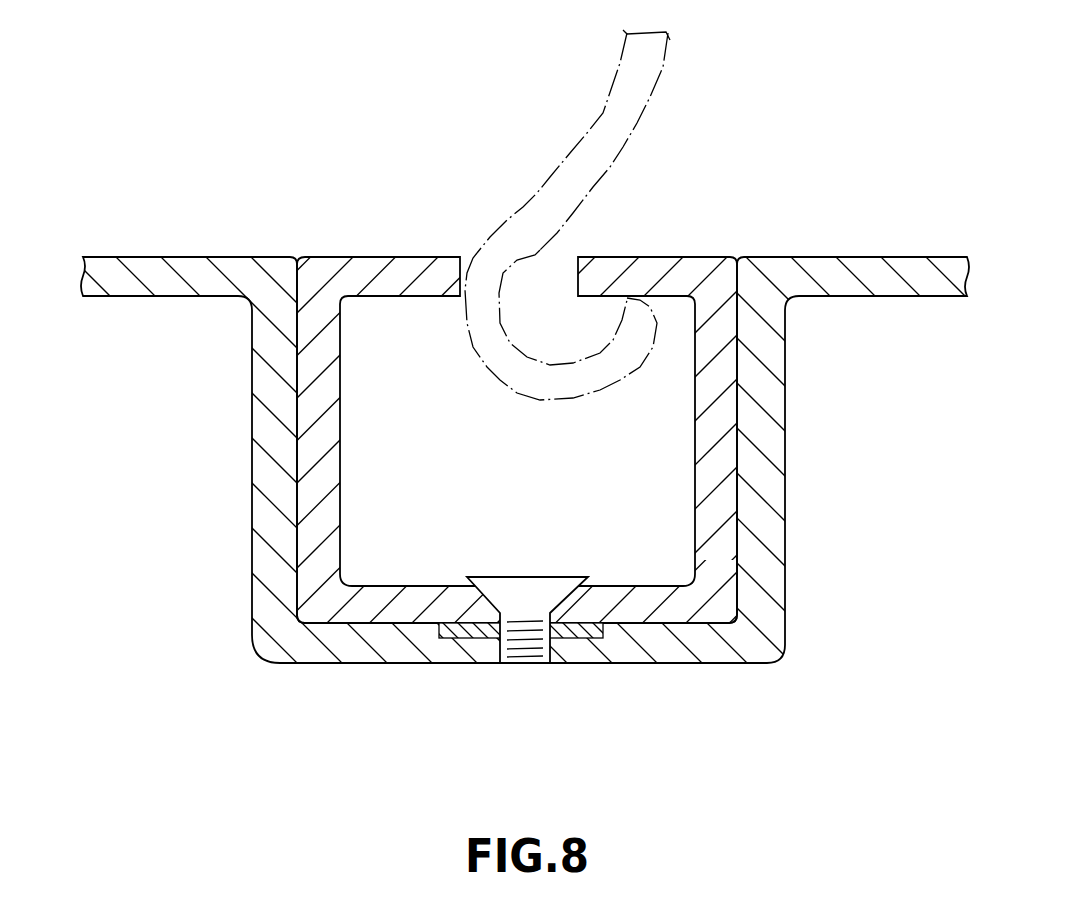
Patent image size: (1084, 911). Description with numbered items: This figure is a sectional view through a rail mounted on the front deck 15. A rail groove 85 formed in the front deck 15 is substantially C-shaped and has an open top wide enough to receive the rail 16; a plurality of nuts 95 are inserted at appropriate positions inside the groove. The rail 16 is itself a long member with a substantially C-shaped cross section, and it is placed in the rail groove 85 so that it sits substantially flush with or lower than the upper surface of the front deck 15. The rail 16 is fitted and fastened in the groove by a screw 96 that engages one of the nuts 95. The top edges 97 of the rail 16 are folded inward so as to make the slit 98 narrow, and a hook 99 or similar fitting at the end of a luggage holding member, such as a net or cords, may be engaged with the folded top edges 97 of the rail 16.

The front deck 15 is at (202, 276).
The rail 16 is at (330, 362).
The rail groove 85 is at (294, 460).
The nut 95 is at (471, 633).
The screw 96 is at (520, 590).
The top edge 97 is at (415, 257).
The slit 98 is at (522, 298).
The hook 99 is at (523, 375).